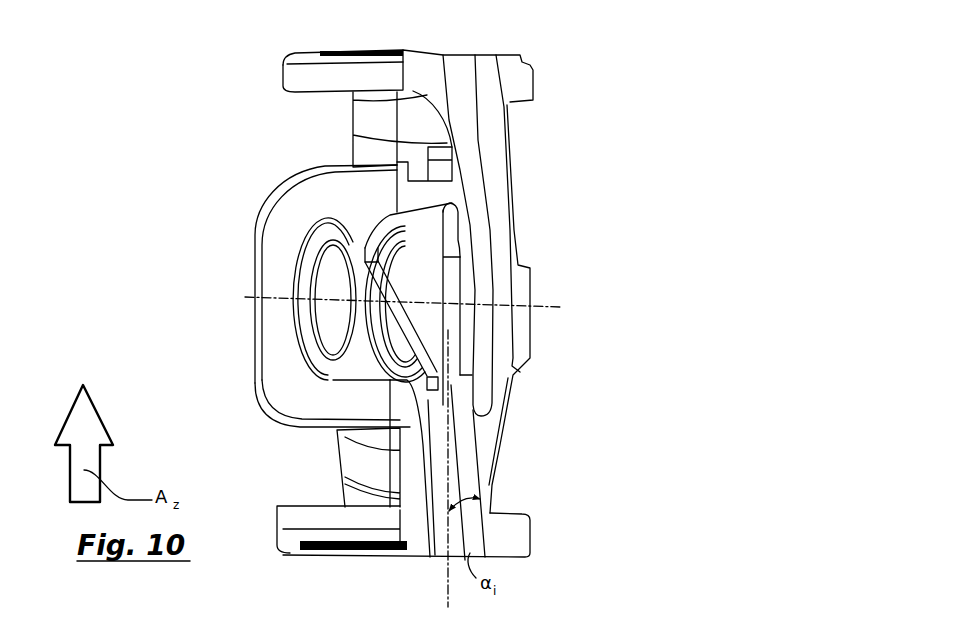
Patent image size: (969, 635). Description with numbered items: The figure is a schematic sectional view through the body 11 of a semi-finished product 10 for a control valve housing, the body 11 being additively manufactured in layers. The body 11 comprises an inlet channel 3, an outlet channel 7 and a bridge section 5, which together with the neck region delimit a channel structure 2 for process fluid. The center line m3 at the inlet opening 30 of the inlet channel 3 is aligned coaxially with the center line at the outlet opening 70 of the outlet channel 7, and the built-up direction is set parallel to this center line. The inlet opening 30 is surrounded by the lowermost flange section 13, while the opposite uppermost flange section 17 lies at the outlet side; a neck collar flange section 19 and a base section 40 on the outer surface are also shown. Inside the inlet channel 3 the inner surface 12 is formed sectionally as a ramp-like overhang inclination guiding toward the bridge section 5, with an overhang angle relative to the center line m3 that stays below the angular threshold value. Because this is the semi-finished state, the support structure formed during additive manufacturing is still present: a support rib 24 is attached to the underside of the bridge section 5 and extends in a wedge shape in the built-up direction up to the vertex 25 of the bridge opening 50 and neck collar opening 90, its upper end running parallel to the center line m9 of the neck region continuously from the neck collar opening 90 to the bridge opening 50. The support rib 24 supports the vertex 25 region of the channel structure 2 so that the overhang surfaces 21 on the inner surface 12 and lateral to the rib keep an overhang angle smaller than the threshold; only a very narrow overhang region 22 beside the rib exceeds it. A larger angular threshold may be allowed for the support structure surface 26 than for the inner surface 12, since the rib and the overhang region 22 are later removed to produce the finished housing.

The semi-finished product 10 is at (256, 142).
The vertex 25 is at (371, 219).
The overhang region 22 is at (305, 260).
The overhang surfaces 21 is at (343, 234).
The neck collar opening 90 is at (305, 285).
The neck collar flange section 19 is at (285, 358).
The channel structure 2 is at (374, 362).
The outlet opening 70 is at (455, 48).
The uppermost flange section 17 is at (524, 80).
The outlet channel 7 is at (503, 120).
The body 11 is at (508, 148).
The bridge section 5 is at (468, 220).
The bridge opening 50 is at (465, 287).
The base section 40 is at (522, 307).
The support rib 24 is at (430, 312).
The support structure surface 26 is at (433, 362).
The inner surface 12 is at (428, 412).
The inlet channel 3 is at (482, 443).
The lowermost flange section 13 is at (510, 533).
The inlet opening 30 is at (450, 575).
The center line of the inlet opening m3 is at (447, 586).
The center line of the neck region m9 is at (253, 300).